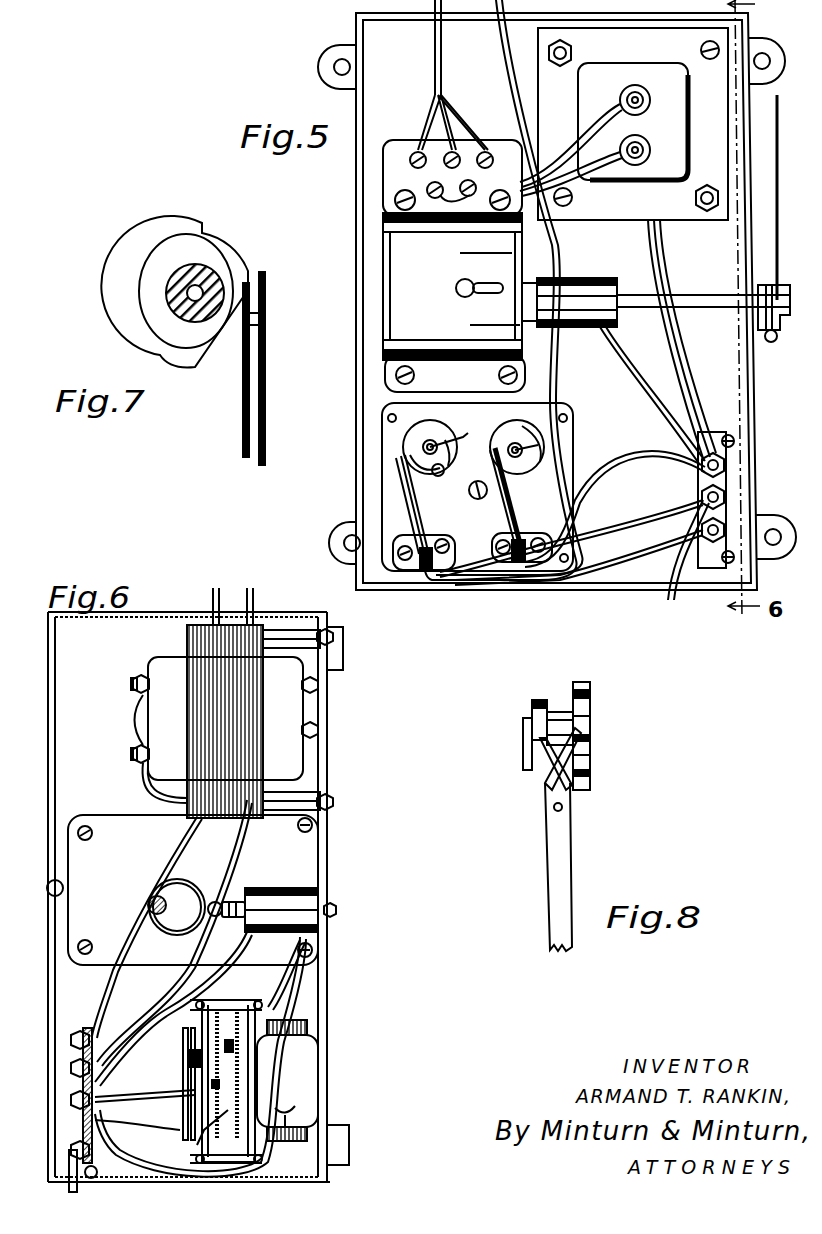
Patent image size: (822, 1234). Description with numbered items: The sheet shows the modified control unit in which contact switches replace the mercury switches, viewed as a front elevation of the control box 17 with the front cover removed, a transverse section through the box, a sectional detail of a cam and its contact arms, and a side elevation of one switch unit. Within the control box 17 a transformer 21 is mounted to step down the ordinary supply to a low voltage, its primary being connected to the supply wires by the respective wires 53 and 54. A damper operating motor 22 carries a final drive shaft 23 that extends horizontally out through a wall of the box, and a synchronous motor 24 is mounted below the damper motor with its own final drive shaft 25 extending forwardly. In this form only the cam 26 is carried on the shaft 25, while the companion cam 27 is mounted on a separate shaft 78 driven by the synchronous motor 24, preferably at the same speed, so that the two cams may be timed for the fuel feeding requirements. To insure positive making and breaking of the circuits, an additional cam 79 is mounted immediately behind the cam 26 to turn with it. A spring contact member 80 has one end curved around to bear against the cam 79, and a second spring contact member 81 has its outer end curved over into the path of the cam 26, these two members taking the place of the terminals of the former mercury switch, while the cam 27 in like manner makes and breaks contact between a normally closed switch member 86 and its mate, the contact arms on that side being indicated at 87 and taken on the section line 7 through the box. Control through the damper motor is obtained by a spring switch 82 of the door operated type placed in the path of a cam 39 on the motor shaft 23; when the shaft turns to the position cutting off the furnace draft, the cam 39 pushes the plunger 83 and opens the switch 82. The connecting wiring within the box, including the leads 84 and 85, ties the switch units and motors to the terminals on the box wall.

In FIG. 6, the section line 7— 7 is at (208, 1025).
In FIG. 5, the control box 17 is at (362, 378).
In FIG. 6, the control box 17 is at (326, 727).
In FIG. 6, the transformer 21 is at (203, 635).
In FIG. 5, the damper operating motor 22 is at (397, 273).
In FIG. 6, the damper operating motor 22 is at (120, 827).
In FIG. 5, the final drive shaft 23 is at (680, 296).
In FIG. 6, the final drive shaft 23 is at (158, 896).
In FIG. 5, the synchronous motor 24 is at (392, 499).
In FIG. 6, the synchronous motor 24 is at (315, 1085).
In FIG. 5, the final drive shaft 25 is at (515, 458).
In FIG. 7, the final drive shaft 25 is at (215, 270).
In FIG. 5, the cam 26 is at (516, 432).
In FIG. 7, the cam 26 is at (150, 237).
In FIG. 8, the cam 26 is at (590, 690).
In FIG. 5, the cam 27 is at (430, 428).
In FIG. 5, the cam 39 is at (571, 327).
In FIG. 6, the cam 39 is at (184, 884).
In FIG. 5, the wire 53 is at (650, 243).
In FIG. 5, the wire 54 is at (662, 245).
In FIG. 5, the separate shaft 78 is at (428, 449).
In FIG. 7, the cam 79 is at (150, 315).
In FIG. 8, the cam 79 is at (540, 700).
In FIG. 5, the spring contact member 80 is at (512, 506).
In FIG. 7, the spring contact member 80 is at (243, 422).
In FIG. 8, the spring contact member 80 is at (543, 770).
In FIG. 5, the spring contact member 81 is at (498, 502).
In FIG. 7, the spring contact member 81 is at (265, 404).
In FIG. 8, the spring contact member 81 is at (562, 820).
In FIG. 6, the spring switch 82 is at (300, 890).
In FIG. 6, the plunger 83 is at (208, 940).
In FIG. 5, the cable 84 is at (557, 387).
In FIG. 6, the cable 84 is at (300, 992).
In FIG. 5, the wire 85 is at (645, 400).
In FIG. 6, the wire 85 is at (270, 988).
In FIG. 5, the switch member 86 is at (418, 505).
In FIG. 5, the contact arm 87 is at (416, 522).